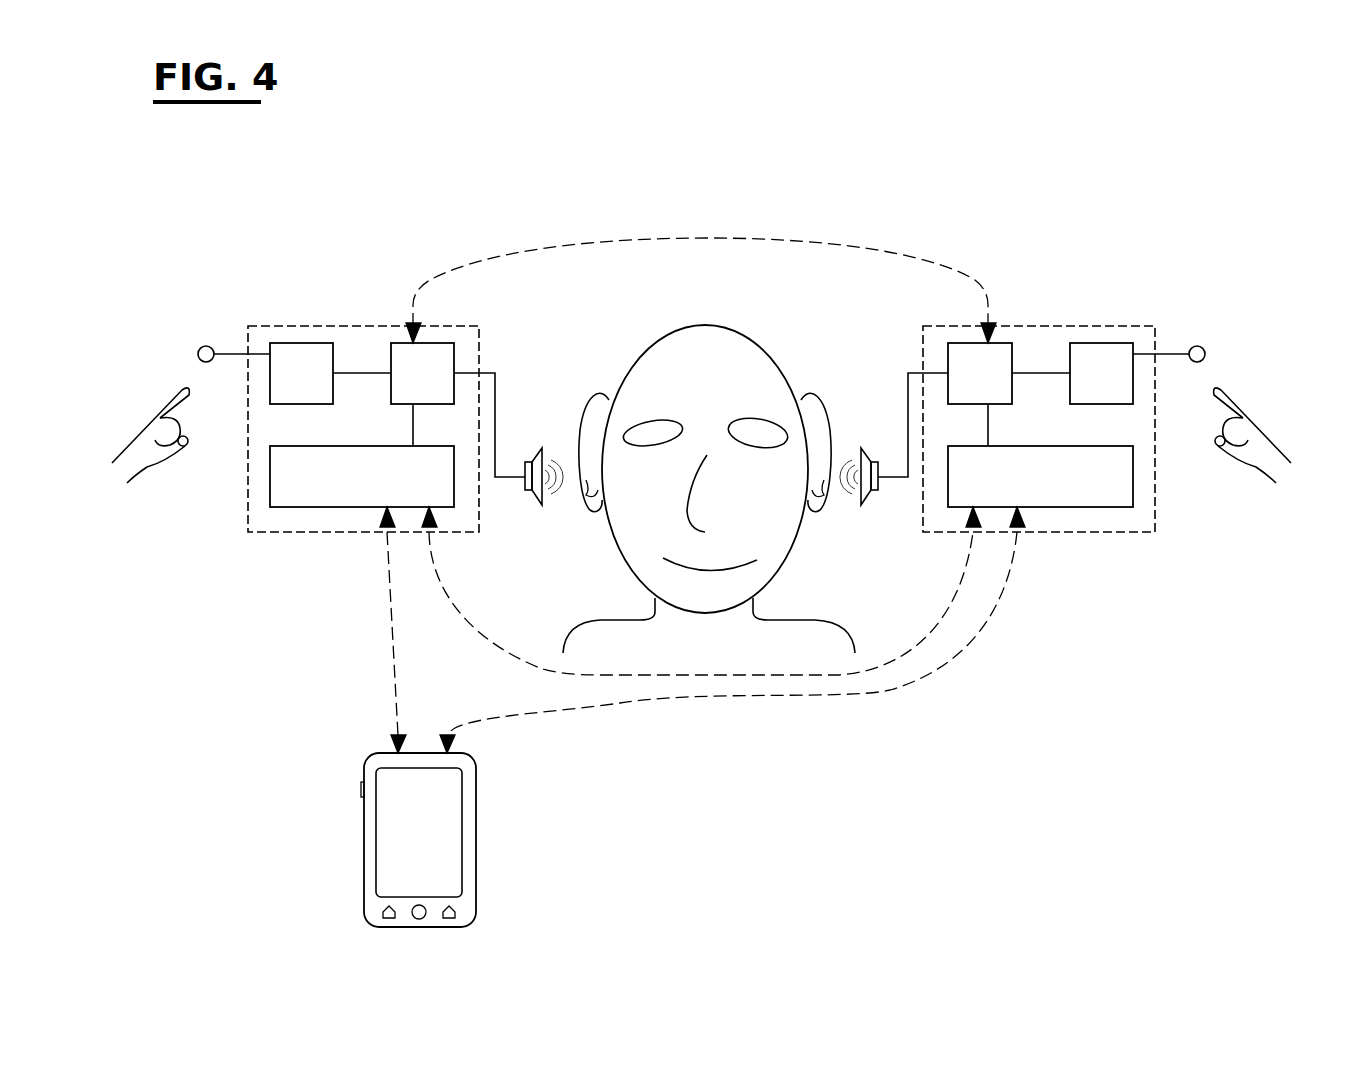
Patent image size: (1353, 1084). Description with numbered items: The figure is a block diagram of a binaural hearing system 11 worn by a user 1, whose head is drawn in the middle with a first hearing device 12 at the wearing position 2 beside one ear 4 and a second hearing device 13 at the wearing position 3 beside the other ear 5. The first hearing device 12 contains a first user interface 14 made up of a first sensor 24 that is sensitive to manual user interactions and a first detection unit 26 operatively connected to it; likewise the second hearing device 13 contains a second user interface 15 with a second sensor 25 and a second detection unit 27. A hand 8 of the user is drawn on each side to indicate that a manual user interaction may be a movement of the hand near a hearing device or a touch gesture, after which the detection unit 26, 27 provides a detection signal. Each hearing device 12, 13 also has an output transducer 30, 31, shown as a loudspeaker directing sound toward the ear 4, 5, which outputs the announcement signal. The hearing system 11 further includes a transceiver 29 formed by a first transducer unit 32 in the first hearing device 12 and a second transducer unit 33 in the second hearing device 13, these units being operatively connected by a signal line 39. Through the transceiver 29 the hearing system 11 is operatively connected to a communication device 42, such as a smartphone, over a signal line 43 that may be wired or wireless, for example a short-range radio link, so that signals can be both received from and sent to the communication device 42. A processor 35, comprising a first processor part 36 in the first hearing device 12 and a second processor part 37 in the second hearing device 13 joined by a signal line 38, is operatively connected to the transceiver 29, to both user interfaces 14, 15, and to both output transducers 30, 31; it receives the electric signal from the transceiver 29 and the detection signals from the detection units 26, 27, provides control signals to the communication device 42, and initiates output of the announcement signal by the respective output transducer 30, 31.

The user 1 is at (795, 575).
The wearing position 2 is at (582, 392).
The wearing position 3 is at (812, 390).
The ear 4 is at (588, 485).
The ear 5 is at (810, 503).
The hand 8 is at (140, 458).
The hearing system 11 is at (388, 248).
The first hearing device 12 is at (290, 326).
The second hearing device 13 is at (1127, 326).
The first user interface 14 is at (252, 322).
The second user interface 15 is at (1165, 322).
The first sensor 24 is at (201, 348).
The second sensor 25 is at (1205, 349).
The first detection unit 26 is at (315, 343).
The second detection unit 27 is at (1087, 343).
The transceiver 29 is at (457, 517).
The first output transducer 30 is at (532, 497).
The second output transducer 31 is at (868, 497).
The first transducer unit 32 is at (342, 507).
The second transducer unit 33 is at (1087, 507).
The processor 35 is at (447, 335).
The first processor part 36 is at (456, 362).
The second processor part 37 is at (948, 363).
The signal line 38 is at (723, 238).
The signal line 39 is at (587, 673).
The communication device 42 is at (364, 843).
The signal line 43 is at (390, 630).